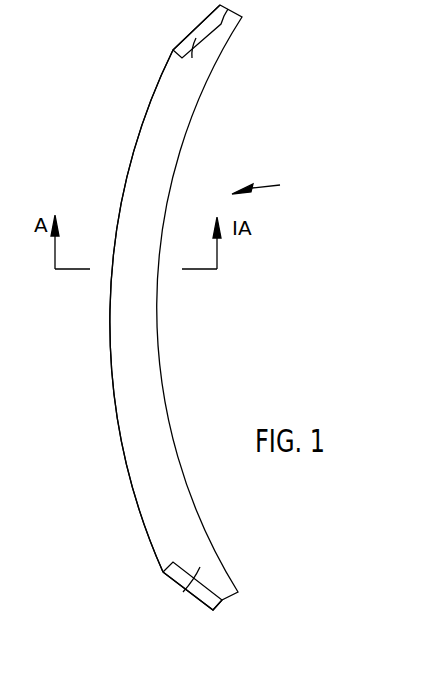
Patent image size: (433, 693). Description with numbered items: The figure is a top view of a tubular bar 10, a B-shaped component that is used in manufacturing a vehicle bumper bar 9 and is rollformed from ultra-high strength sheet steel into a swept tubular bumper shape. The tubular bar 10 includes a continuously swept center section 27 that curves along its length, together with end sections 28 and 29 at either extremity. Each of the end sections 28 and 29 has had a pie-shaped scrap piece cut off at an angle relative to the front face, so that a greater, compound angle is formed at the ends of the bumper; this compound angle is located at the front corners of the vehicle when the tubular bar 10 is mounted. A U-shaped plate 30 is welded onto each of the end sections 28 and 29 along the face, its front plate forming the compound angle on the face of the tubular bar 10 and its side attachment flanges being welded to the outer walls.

The vehicle bumper bar 9 is at (266, 190).
The tubular bar 10 is at (112, 292).
The center section 27 is at (117, 222).
The end section 28 is at (183, 42).
The end section 29 is at (197, 598).
The U-shaped plate 30 is at (203, 38).